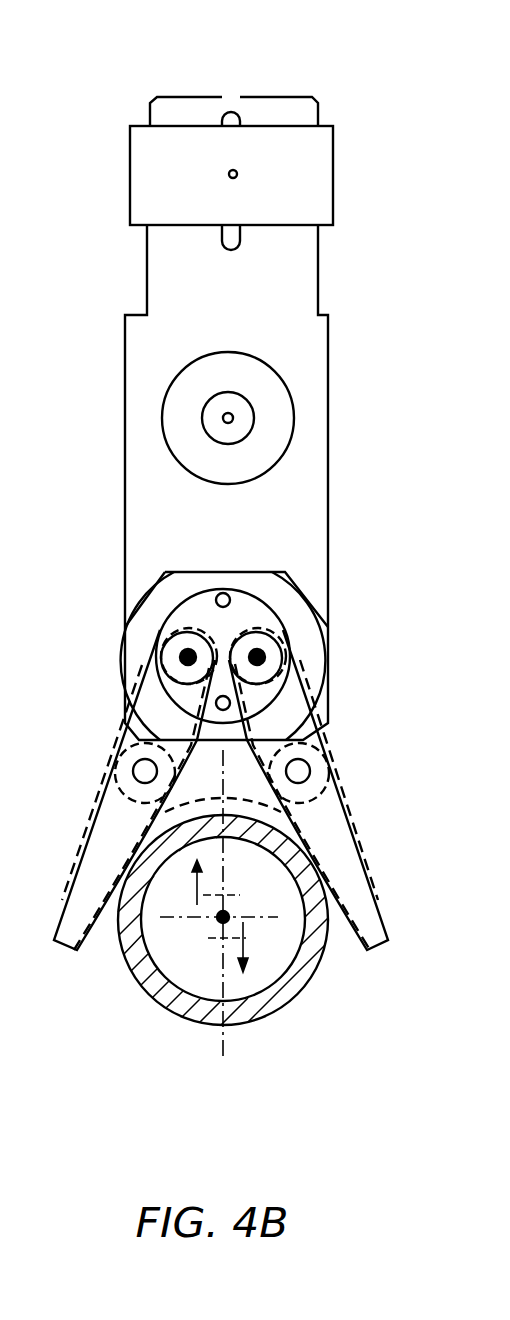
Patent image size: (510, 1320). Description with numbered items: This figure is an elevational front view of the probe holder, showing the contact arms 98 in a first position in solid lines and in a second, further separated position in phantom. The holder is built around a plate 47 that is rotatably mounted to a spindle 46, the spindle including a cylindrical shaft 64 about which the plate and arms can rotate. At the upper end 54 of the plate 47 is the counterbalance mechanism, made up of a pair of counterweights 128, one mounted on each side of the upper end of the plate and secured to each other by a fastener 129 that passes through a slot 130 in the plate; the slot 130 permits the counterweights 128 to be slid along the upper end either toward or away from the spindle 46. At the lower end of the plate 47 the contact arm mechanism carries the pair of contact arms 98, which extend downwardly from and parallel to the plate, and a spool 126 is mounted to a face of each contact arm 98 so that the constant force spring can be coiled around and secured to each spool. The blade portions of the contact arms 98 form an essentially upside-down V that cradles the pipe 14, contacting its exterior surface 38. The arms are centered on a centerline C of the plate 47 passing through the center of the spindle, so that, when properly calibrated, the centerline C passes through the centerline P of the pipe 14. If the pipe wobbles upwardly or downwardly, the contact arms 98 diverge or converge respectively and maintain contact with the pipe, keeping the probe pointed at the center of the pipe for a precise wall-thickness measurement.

The upper end 54 is at (150, 118).
The slot 130 is at (226, 114).
The counterweights 128 is at (137, 183).
The fastener 129 is at (238, 178).
The plate 47 is at (133, 451).
The spindle 46 is at (286, 386).
The cylindrical shaft 64 is at (234, 416).
The spool 126 is at (327, 763).
The contact arms 98 is at (350, 864).
The exterior surface 38 is at (185, 1018).
The extruded pipe 14 is at (293, 990).
The centerline of the pipe P is at (229, 915).
The centerline of the plate C is at (223, 1035).